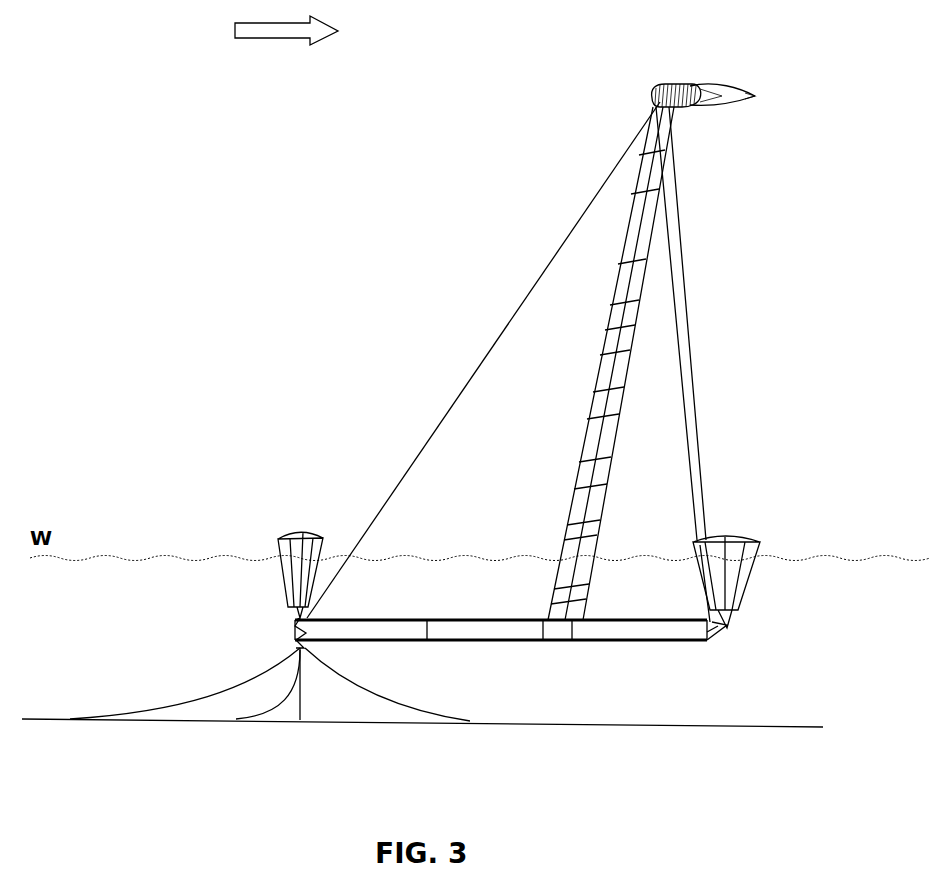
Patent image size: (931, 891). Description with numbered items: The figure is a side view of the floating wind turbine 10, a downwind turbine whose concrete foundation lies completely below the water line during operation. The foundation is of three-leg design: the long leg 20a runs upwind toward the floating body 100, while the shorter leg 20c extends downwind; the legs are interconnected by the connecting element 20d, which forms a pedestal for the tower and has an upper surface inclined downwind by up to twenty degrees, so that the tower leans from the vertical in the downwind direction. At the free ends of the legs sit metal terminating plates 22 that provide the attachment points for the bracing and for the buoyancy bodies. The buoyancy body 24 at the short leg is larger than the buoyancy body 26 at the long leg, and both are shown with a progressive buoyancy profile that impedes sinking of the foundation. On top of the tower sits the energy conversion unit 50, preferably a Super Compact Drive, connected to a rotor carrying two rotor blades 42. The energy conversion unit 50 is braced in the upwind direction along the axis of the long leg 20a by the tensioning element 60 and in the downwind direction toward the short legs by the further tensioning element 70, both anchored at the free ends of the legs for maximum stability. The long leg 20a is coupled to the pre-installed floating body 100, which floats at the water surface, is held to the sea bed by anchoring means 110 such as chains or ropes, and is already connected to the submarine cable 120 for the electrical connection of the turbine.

The floating wind turbine 10 is at (370, 180).
The energy conversion unit 50 is at (658, 90).
The rotor blade 42 is at (712, 102).
The long leg 20a is at (468, 646).
The short leg 20c is at (680, 630).
The connecting element 20d is at (558, 632).
The terminating plate 22 is at (708, 632).
The buoyancy body 24 is at (748, 570).
The buoyancy body 26 is at (287, 545).
The tensioning element 60 is at (470, 380).
The further tensioning element 70 is at (690, 338).
The floating body 100 is at (296, 643).
The anchoring means 110 is at (187, 702).
The submarine cable 120 is at (277, 705).